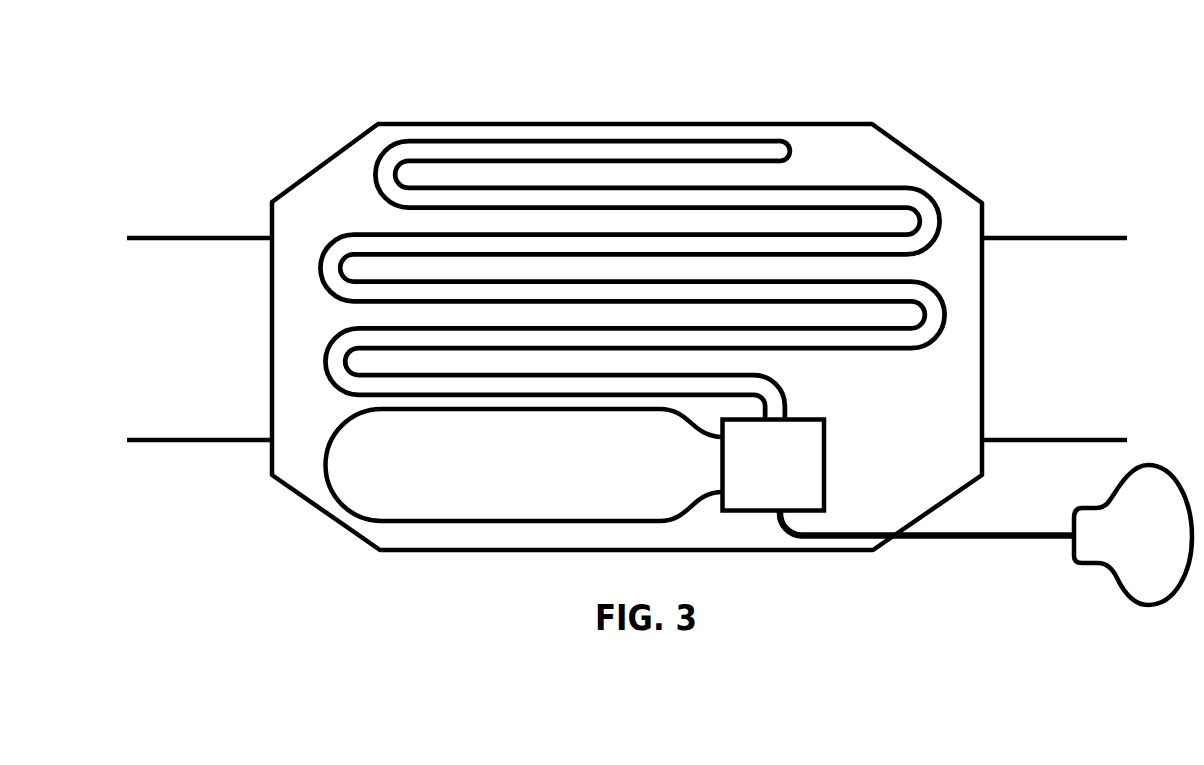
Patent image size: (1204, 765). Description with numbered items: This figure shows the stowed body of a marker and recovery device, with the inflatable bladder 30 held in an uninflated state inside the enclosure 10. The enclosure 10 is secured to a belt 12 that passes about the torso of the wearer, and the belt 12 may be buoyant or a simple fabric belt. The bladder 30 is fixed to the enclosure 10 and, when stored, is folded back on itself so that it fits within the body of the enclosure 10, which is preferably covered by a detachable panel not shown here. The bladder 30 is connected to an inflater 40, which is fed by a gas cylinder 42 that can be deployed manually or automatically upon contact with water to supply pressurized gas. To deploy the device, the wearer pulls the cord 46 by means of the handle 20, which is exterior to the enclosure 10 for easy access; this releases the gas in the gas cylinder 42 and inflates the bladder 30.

The enclosure 10 is at (627, 337).
The belt 12 is at (627, 339).
The handle 20 is at (1133, 535).
The inflatable bladder 30 is at (390, 229).
The inflater 40 is at (774, 465).
The gas cylinder 42 is at (524, 465).
The cord 46 is at (927, 550).